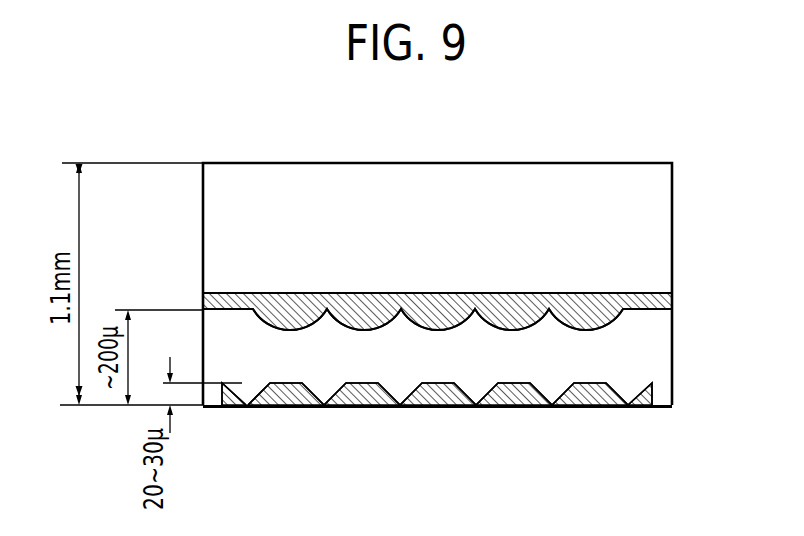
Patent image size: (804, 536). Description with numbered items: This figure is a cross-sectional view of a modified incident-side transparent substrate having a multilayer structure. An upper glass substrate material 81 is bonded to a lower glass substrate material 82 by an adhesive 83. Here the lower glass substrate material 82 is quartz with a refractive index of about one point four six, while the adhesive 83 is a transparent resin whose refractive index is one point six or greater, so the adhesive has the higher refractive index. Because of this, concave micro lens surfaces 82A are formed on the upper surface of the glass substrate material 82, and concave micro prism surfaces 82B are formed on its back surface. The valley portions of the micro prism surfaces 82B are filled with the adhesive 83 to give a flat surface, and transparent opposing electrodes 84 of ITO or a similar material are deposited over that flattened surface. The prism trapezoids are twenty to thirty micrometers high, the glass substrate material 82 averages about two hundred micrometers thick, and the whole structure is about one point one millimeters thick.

The upper glass substrate material 81 is at (648, 202).
The lower glass substrate material 82 is at (648, 343).
The concave micro lens surfaces 82A is at (300, 328).
The concave micro prism surfaces 82B is at (365, 385).
The adhesive 83 is at (672, 295).
The transparent opposing electrodes 84 is at (503, 407).